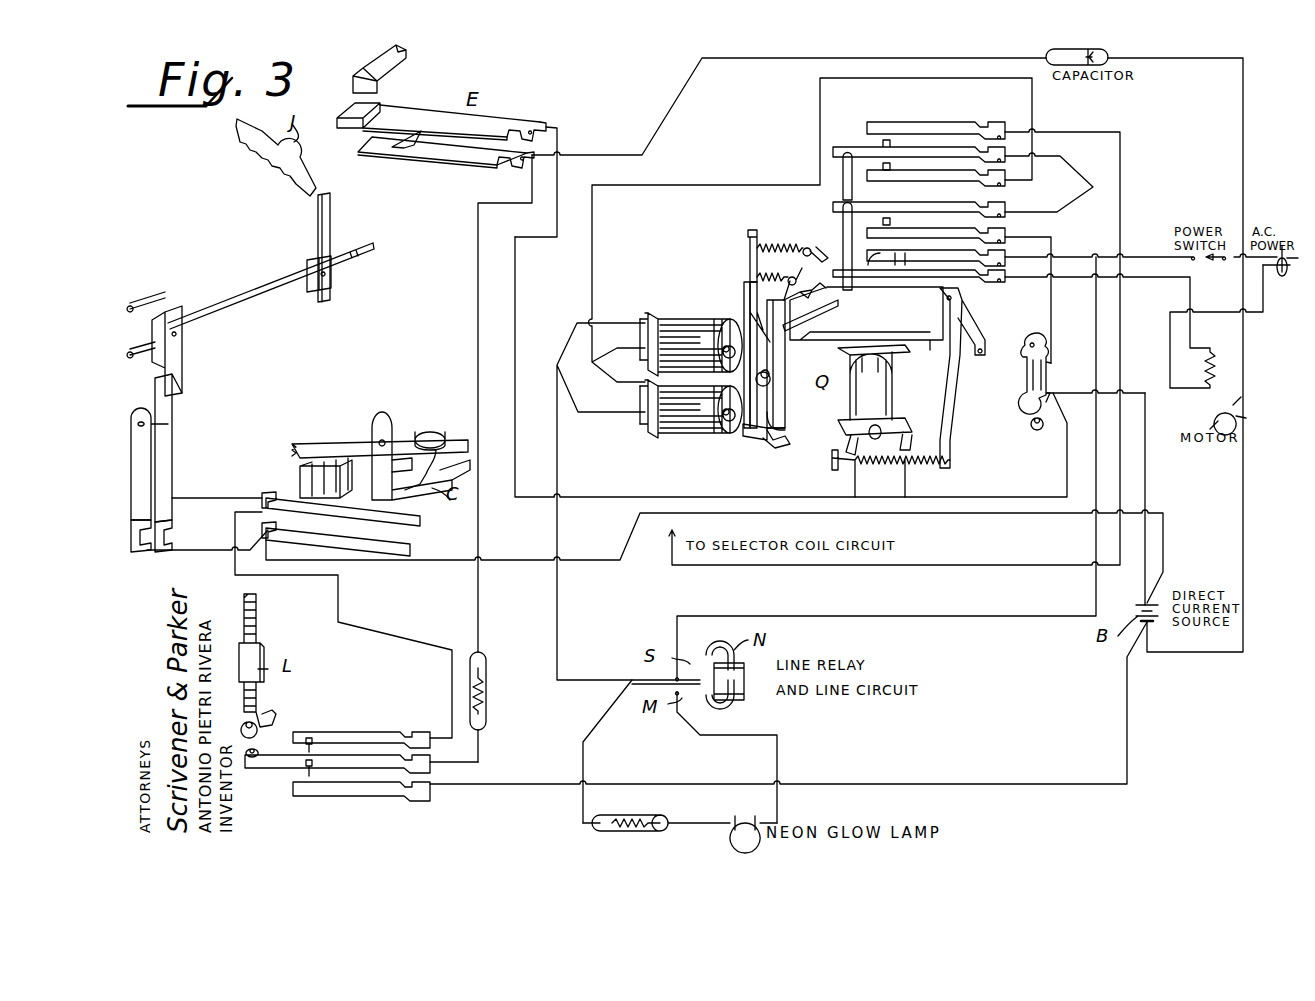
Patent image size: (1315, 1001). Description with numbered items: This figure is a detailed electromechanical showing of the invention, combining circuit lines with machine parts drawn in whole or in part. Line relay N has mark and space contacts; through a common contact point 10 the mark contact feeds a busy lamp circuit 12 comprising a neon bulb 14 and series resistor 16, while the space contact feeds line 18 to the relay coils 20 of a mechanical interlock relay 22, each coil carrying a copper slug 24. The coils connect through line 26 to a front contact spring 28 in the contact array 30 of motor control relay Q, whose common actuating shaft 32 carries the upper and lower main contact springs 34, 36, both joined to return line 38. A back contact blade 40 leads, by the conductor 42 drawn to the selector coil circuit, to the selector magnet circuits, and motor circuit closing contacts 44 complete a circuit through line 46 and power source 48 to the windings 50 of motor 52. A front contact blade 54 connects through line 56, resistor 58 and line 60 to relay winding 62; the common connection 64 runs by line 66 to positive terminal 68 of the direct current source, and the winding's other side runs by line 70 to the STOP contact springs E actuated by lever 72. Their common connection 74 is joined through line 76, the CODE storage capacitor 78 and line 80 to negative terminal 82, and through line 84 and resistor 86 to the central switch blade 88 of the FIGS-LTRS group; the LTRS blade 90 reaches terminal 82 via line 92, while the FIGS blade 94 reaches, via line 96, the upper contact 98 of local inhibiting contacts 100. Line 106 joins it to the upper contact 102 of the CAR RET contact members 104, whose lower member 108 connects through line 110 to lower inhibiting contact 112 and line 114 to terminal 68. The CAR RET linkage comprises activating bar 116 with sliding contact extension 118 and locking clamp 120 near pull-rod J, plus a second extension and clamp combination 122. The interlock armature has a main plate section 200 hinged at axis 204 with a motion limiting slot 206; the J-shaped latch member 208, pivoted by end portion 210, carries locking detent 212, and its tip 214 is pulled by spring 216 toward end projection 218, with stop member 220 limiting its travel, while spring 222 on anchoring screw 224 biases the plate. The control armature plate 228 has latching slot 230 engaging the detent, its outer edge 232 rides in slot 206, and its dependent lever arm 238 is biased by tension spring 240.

The common contact point 10 is at (630, 682).
The busy lamp circuit 12 is at (778, 744).
The neon bulb 14 is at (746, 798).
The series resistor 16 is at (644, 802).
The line 18 is at (560, 466).
The relay coils 20 is at (691, 375).
The mechanical interlock relay 22 is at (703, 376).
The copper slugs 24 is at (718, 326).
The line 26 is at (592, 247).
The front contact spring 28 is at (918, 180).
The contact array 30 is at (1049, 182).
The common actuating shaft 32 is at (848, 232).
The upper main contact spring 34 is at (832, 156).
The lower main contact spring 36 is at (832, 214).
The return line 38 is at (982, 630).
The back contact blade 40 is at (930, 124).
The conductor 42 is at (1124, 140).
The motor circuit closing contacts 44 is at (984, 284).
The line 46 is at (1124, 257).
The electric power source 48 is at (1278, 272).
The windings 50 is at (1210, 354).
The electric motor 52 is at (1228, 416).
The front contact blade 54 is at (936, 237).
The line 56 is at (1050, 322).
The resistor 58 is at (1044, 378).
The line 60 is at (1022, 498).
The winding 62 is at (875, 400).
The common connection 64 is at (1052, 394).
The line 66 is at (1146, 470).
The positive terminal 68 is at (1152, 604).
The line 70 is at (515, 300).
The STOP signal function lever 72 is at (398, 86).
The common connection 74 is at (548, 146).
The line 76 is at (752, 60).
The CODE signal storage capacitor 78 is at (1108, 60).
The line 80 is at (1246, 538).
The negative terminal 82 is at (1150, 622).
The line 84 is at (478, 316).
The resistor 86 is at (490, 704).
The central switch blade 88 is at (278, 772).
The LTRS function contact blade 90 is at (360, 800).
The line 92 is at (510, 788).
The FIGS function contact blade 94 is at (334, 734).
The line 96 is at (404, 634).
The upper contact 98 is at (285, 489).
The local inhibiting contacts 100 is at (381, 481).
The upper contact 102 is at (170, 440).
The CAR RET contact members 104 is at (131, 410).
The line 106 is at (204, 498).
The lower carriage return contact member 108 is at (146, 548).
The line 110 is at (194, 550).
The lower local inhibiting contact 112 is at (314, 532).
The line 114 is at (500, 560).
The activating bar 116 is at (244, 310).
The sliding contact extension 118 is at (330, 205).
The locking clamp 120 is at (326, 288).
The contact extension and locking clamp combination 122 is at (177, 308).
The main flat plate section 200 is at (780, 442).
The axis 204 is at (742, 436).
The motion limiting slot 206 is at (740, 298).
The control armature latch member 208 is at (786, 360).
The end portion 210 is at (778, 426).
The locking detent 212 is at (805, 289).
The outermost tip 214 is at (797, 282).
The tension spring 216 is at (772, 270).
The end projection 218 is at (752, 242).
The variable stop member 220 is at (761, 382).
The tension spring 222 is at (780, 242).
The anchoring screw 224 is at (824, 251).
The control armature plate 228 is at (866, 318).
The latching slot 230 is at (786, 316).
The outer edge 232 is at (762, 355).
The dependent lever arm 238 is at (942, 414).
The tension spring 240 is at (878, 468).